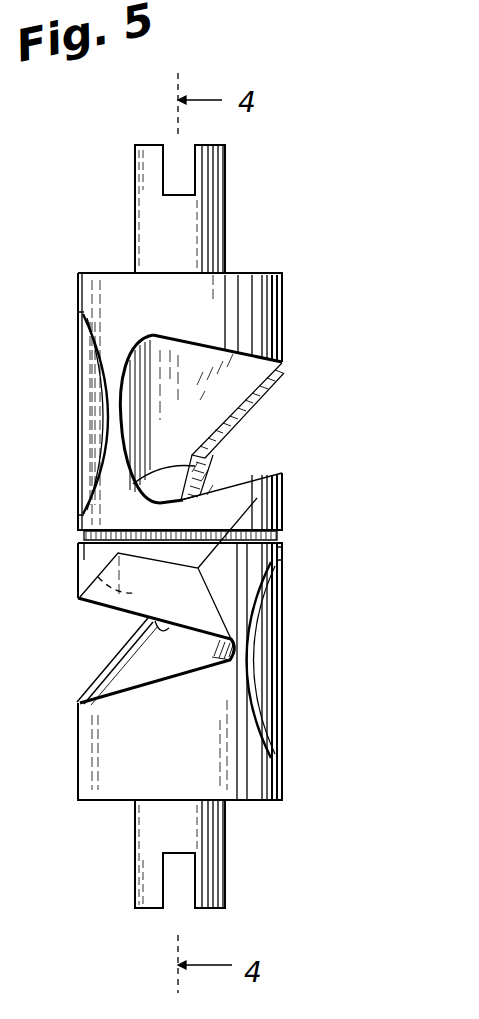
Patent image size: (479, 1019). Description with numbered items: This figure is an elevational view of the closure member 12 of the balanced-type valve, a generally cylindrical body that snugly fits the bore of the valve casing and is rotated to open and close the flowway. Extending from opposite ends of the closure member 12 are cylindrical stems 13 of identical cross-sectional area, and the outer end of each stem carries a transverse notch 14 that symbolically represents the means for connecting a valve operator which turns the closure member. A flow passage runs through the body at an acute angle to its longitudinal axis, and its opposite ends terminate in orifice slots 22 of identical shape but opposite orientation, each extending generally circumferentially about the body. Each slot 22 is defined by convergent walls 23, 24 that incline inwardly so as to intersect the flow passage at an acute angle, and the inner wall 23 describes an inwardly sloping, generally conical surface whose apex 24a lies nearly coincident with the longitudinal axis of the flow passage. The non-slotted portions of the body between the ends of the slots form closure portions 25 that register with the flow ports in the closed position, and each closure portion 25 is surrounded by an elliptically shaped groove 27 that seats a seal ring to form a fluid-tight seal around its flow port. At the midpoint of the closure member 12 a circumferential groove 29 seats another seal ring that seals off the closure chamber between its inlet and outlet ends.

The closure member 12 is at (283, 282).
The stems 13 is at (212, 230).
The transverse notches 14 is at (163, 191).
The orifice slots 22 is at (172, 342).
The inner wall 23 is at (262, 387).
The wall 24 is at (262, 462).
The apex 24a is at (218, 463).
The closure portions 25 is at (84, 401).
The elliptically shaped grooves 27 is at (102, 362).
The groove 29 is at (278, 536).